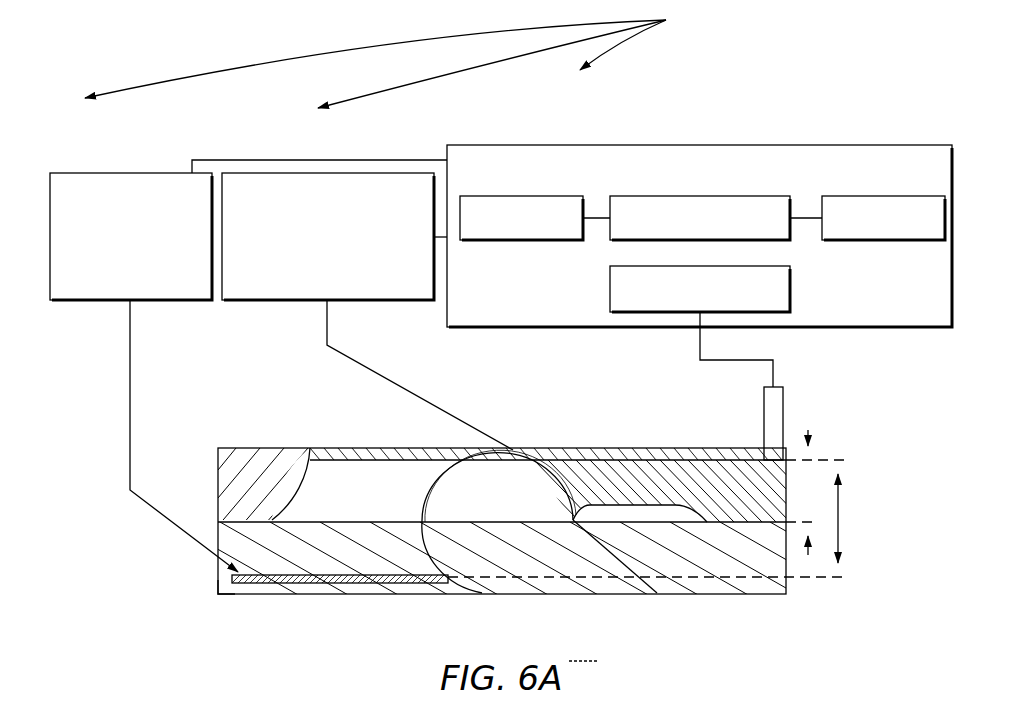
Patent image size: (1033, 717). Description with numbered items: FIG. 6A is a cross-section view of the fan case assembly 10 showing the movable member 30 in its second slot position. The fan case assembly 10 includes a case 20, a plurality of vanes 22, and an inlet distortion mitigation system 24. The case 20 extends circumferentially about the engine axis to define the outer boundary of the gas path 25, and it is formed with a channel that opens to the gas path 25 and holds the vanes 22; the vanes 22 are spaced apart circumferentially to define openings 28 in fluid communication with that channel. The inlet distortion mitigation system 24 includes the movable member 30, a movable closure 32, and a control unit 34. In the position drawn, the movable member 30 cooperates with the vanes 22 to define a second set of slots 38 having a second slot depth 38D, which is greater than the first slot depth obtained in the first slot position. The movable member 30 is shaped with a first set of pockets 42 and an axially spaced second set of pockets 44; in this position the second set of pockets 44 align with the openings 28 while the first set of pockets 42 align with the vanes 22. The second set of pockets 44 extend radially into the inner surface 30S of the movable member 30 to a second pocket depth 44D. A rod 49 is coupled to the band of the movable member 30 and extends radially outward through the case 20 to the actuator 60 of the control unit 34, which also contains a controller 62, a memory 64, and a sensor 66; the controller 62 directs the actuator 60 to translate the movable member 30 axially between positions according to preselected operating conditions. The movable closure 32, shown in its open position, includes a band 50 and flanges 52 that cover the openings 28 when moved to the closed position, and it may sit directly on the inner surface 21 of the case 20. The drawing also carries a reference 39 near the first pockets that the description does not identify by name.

The fan case assembly 10 is at (135, 65).
The inlet distortion mitigation system 24 is at (390, 58).
The movable closure 32 is at (130, 173).
The movable member 30 is at (330, 173).
The control unit 34 is at (630, 145).
The sensor 66 is at (505, 196).
The controller 62 is at (780, 242).
The memory 64 is at (868, 196).
The actuator 60 is at (610, 304).
The case 20 is at (246, 405).
The first slot 39 is at (345, 475).
The second set of pockets 44 is at (460, 489).
The first set of pockets 42 is at (618, 508).
The rod 49 is at (792, 420).
The second pocket depth 44D is at (810, 428).
The second slot depth 38D is at (838, 520).
The inner surface 30S is at (503, 523).
The inner surface 21 is at (222, 596).
The band 50 is at (298, 585).
The flanges 52 is at (366, 585).
The second set of slots 38 is at (462, 556).
The openings 28 is at (500, 594).
The vanes 22 is at (576, 582).
The gas path 25 is at (583, 649).